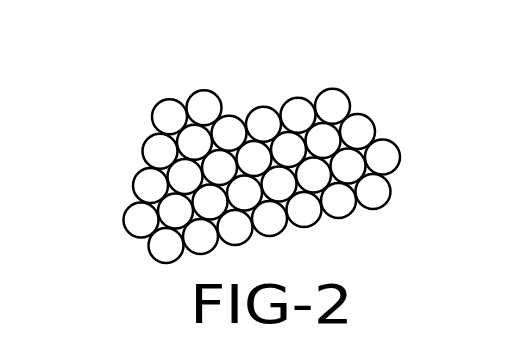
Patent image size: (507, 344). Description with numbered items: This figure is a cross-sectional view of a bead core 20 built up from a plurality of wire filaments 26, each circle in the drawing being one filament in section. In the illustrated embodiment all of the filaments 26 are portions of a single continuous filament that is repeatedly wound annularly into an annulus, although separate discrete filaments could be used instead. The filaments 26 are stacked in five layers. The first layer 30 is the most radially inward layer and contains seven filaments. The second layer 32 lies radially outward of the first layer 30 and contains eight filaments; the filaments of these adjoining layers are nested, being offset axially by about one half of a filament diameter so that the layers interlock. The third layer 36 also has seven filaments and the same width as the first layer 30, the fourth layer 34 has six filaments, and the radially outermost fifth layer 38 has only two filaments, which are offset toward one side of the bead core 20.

The bead core 20 is at (340, 68).
The wire filament 26 is at (172, 115).
The first layer 30 is at (376, 195).
The second layer 32 is at (390, 158).
The fourth layer 34 is at (366, 130).
The third layer 36 is at (334, 104).
The fifth layer 38 is at (206, 103).